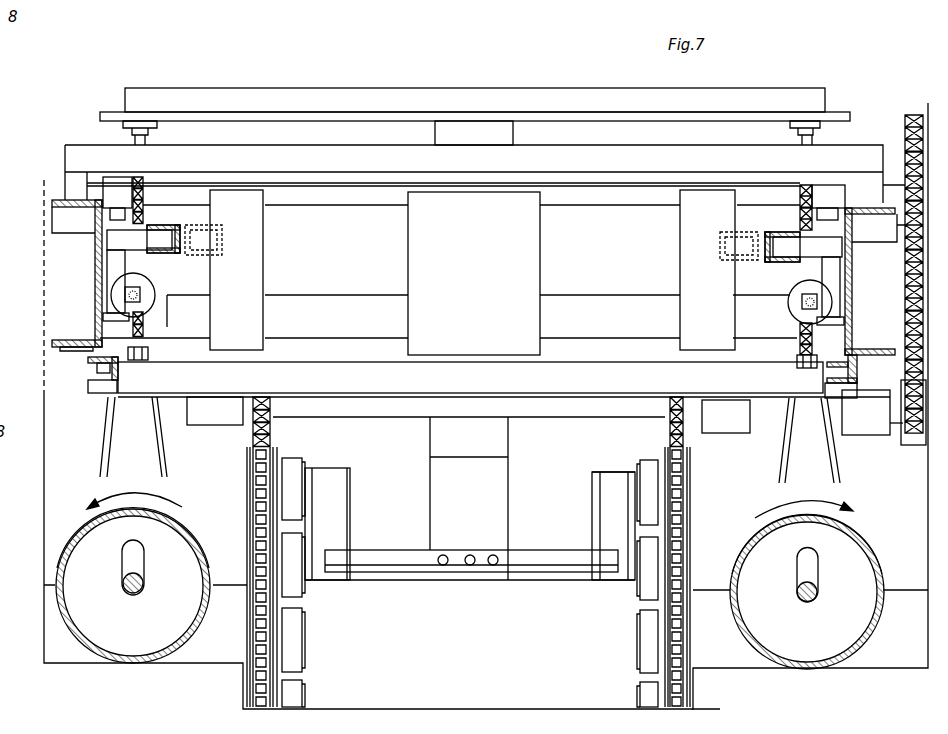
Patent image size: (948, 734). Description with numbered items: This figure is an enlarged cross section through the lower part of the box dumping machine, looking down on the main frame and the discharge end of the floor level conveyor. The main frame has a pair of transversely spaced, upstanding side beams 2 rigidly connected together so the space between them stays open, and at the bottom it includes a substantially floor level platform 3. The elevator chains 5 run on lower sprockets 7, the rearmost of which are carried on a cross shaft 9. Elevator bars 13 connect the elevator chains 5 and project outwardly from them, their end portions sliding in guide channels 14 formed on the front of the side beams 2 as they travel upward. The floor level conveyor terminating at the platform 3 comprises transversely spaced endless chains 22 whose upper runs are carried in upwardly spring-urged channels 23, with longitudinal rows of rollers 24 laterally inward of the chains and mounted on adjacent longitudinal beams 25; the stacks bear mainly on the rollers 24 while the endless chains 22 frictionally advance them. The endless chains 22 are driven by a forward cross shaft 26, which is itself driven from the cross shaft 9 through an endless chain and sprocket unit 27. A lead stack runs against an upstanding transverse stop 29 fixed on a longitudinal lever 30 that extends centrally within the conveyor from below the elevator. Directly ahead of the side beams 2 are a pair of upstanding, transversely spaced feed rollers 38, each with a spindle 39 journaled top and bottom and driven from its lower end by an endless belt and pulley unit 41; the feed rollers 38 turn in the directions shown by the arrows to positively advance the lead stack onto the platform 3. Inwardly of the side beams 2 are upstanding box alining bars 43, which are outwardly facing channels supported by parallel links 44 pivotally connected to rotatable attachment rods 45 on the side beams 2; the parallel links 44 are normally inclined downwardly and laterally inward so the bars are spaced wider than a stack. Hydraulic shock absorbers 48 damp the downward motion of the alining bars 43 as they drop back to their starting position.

The side beams 2 is at (100, 280).
The platform 3 is at (258, 272).
The elevator chains 5 is at (148, 353).
The lower sprockets 7 is at (146, 186).
The cross shaft 9 is at (612, 205).
The elevator bars 13 is at (345, 104).
The guide channels 14 is at (92, 368).
The endless chains 22 is at (260, 492).
The channels 23 is at (278, 452).
The rollers 24 is at (292, 695).
The longitudinal beams 25 is at (343, 513).
The forward cross shaft 26 is at (407, 408).
The endless chain and sprocket unit 27 is at (907, 310).
The transverse stop 29 is at (373, 568).
The longitudinal lever 30 is at (498, 497).
The feed rollers 38 is at (62, 617).
The spindle 39 is at (125, 588).
The endless belt and pulley unit 41 is at (106, 434).
The box alining bars 43 is at (185, 229).
The parallel links 44 is at (127, 240).
The rotatable attachment rods 45 is at (115, 290).
The hydraulic shock absorbers 48 is at (150, 283).